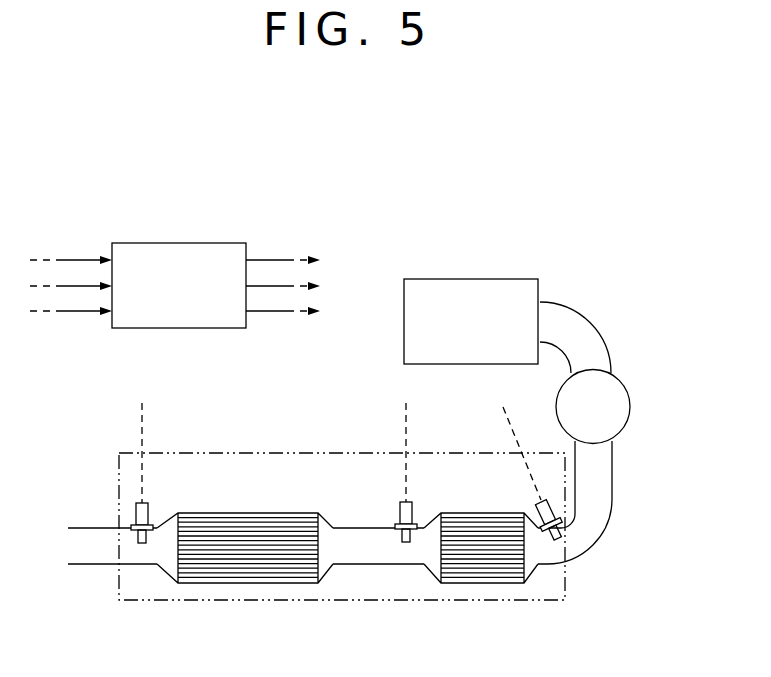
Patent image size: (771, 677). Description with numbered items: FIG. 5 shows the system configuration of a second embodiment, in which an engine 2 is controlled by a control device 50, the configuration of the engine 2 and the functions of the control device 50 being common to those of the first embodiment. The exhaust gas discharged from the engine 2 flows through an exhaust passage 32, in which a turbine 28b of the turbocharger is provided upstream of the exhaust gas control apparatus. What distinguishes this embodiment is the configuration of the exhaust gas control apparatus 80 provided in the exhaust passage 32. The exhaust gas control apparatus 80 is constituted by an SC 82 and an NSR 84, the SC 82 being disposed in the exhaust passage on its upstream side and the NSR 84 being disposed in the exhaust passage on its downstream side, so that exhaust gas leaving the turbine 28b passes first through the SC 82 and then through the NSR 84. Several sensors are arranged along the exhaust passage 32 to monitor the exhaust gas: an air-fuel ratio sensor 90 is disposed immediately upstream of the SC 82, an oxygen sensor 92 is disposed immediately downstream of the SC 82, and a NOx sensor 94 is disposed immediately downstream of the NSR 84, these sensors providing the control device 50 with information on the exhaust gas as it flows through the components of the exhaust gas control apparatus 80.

The engine 2 is at (471, 279).
The turbine 28b is at (630, 390).
The exhaust passage 32 is at (612, 470).
The control device 50 is at (173, 243).
The exhaust gas control apparatus 80 is at (306, 453).
The SC 82 is at (475, 513).
The NSR 84 is at (250, 513).
The air-fuel ratio sensor 90 is at (552, 540).
The oxygen sensor 92 is at (405, 542).
The NOx sensor 94 is at (140, 543).